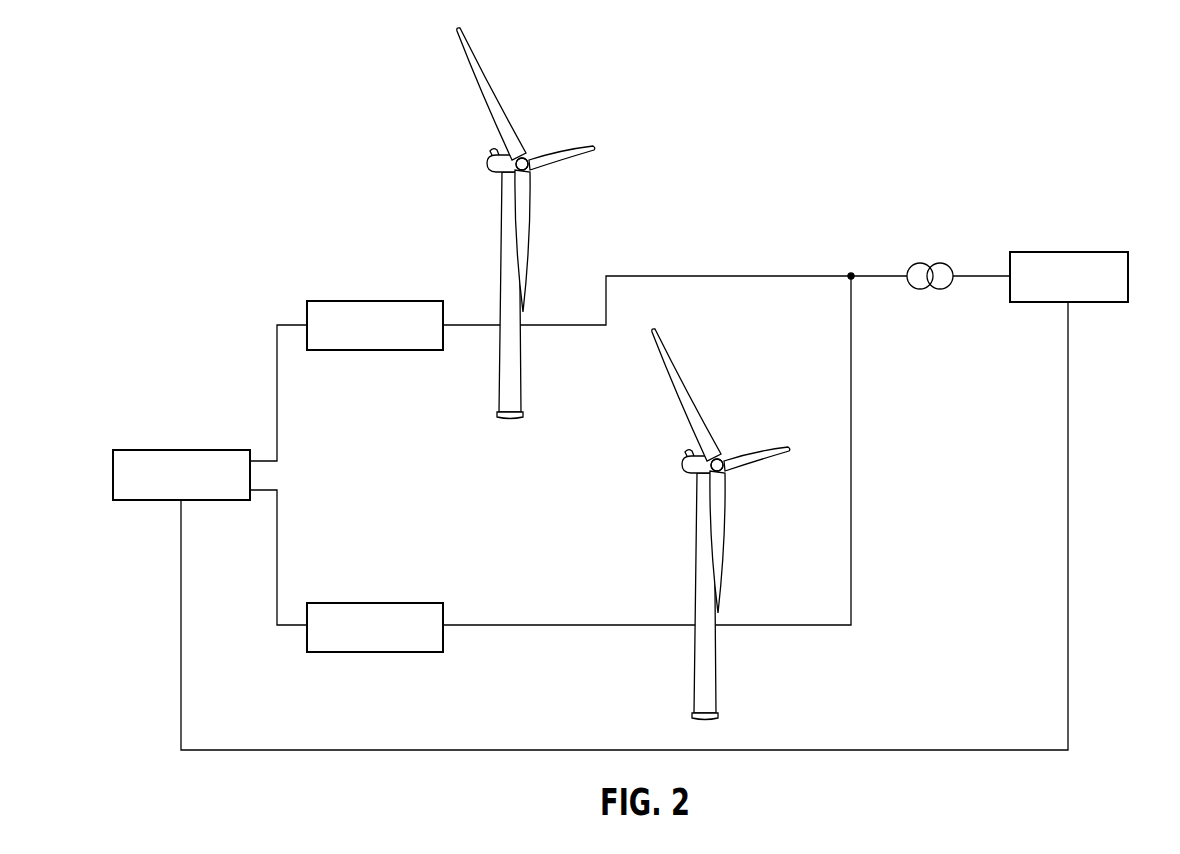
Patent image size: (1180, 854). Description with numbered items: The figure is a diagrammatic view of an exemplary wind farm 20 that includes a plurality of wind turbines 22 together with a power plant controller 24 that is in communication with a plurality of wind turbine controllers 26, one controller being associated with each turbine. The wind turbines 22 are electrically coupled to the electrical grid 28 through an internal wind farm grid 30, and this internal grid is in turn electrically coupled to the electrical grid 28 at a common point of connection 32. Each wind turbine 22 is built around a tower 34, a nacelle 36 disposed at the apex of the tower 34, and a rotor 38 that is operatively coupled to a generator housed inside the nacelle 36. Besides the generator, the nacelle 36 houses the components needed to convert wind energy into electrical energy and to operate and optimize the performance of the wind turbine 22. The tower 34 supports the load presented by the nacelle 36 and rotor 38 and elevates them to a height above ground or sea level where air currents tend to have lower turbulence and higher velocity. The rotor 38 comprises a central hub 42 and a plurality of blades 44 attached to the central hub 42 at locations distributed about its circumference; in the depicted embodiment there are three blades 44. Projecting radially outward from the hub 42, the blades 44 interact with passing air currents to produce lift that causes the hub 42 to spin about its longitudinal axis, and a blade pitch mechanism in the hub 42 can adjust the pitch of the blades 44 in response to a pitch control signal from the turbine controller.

The wind farm 20 is at (922, 108).
The wind turbine 22 is at (631, 374).
The power plant controller 24 is at (134, 449).
The wind turbine controller 26 is at (326, 300).
The electrical grid 28 is at (1107, 252).
The internal wind farm grid 30 is at (881, 274).
The common point of connection 32 is at (944, 262).
The tower 34 is at (502, 290).
The nacelle 36 is at (495, 177).
The rotor 38 is at (528, 152).
The central hub 42 is at (528, 166).
The blade 44 is at (492, 82).